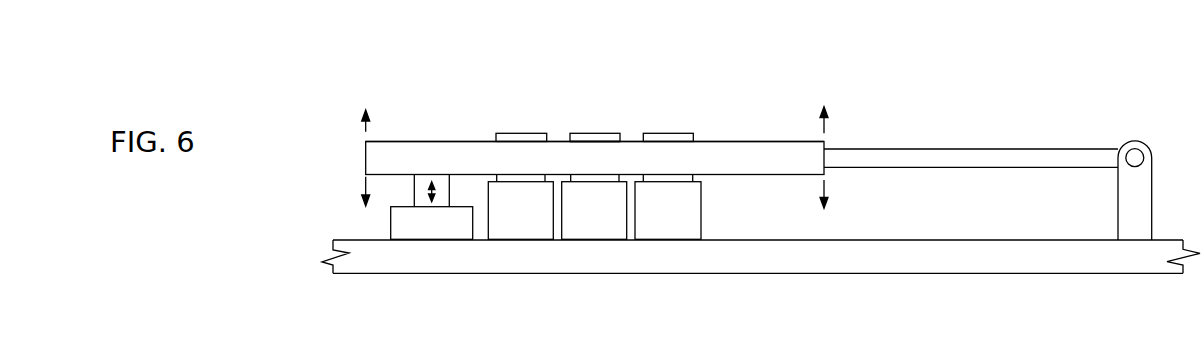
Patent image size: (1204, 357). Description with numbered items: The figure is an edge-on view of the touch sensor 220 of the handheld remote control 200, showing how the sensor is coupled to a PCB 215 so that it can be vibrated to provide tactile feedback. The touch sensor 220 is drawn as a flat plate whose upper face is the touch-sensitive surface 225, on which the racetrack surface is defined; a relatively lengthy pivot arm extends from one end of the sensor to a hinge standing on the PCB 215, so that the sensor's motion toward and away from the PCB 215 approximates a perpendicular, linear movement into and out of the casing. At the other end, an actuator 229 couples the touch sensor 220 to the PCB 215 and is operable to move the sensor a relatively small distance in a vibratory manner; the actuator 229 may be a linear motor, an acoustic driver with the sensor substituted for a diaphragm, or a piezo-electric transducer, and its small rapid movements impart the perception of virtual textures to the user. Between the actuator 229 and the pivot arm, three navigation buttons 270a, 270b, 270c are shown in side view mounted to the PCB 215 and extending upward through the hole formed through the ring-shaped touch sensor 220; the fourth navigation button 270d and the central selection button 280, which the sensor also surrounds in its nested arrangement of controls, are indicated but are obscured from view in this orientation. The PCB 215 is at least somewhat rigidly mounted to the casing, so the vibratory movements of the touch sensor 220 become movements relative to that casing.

The handheld remote control 200 is at (1092, 56).
The PCB 215 is at (777, 263).
The touch sensor 220 is at (612, 167).
The touch-sensitive surface 225 is at (448, 134).
The actuator 229 is at (448, 235).
The navigation button 270a is at (547, 222).
The navigation button 270b is at (693, 222).
The navigation button 270c is at (620, 222).
The navigation button 270d is at (587, 110).
The selection button 280 is at (604, 110).